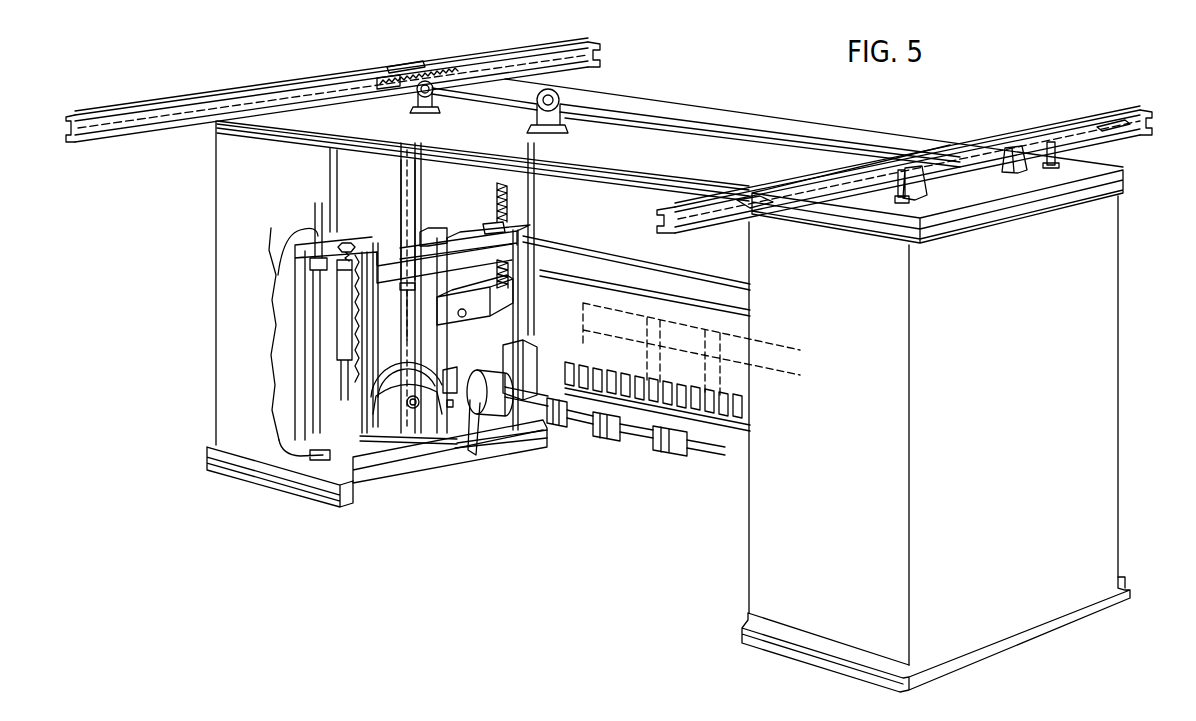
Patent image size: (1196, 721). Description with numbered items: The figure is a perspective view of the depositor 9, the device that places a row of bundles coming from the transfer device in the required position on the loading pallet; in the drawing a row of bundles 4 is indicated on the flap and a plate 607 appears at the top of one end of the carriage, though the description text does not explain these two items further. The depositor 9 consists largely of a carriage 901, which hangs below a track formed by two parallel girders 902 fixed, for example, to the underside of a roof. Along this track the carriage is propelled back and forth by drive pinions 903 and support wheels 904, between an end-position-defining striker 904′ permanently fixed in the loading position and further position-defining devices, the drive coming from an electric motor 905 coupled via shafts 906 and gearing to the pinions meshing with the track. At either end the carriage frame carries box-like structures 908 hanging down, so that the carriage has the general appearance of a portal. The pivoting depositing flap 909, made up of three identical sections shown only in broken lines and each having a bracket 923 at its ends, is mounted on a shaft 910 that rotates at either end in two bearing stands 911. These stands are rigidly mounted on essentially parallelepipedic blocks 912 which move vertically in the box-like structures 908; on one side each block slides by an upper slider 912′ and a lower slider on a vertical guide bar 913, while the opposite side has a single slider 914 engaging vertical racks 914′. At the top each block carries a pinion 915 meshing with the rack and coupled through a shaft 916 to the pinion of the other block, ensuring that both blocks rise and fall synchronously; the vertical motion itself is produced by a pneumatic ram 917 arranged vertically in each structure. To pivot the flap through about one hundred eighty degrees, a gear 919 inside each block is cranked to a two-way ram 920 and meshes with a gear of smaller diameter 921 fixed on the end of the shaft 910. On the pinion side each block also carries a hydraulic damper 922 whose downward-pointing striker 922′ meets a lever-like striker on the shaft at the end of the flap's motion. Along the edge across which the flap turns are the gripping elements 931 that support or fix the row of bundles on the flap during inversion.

The depositor 9 is at (763, 113).
The workpiece 4 is at (627, 320).
The table top plate 607 is at (1122, 180).
The carriage 901 is at (618, 153).
The parallel girders 902 is at (135, 108).
The drive pinions 903 is at (416, 96).
The support wheels 904 is at (1002, 148).
The position-defining striker 904′ is at (750, 210).
The electric motor 905 is at (550, 92).
The shafts 906 is at (488, 97).
The box-like structures 908 is at (266, 170).
The depositing flap 909 is at (590, 357).
The shaft 910 is at (578, 420).
The bearing stands 911 is at (453, 413).
The blocks 912 is at (373, 238).
The upper slider 912′ is at (312, 262).
The vertical guide bar 913 is at (317, 297).
The single slider 914 is at (515, 298).
The racks 914′ is at (503, 203).
The pinion 915 is at (486, 226).
The shaft 916 is at (550, 242).
The pneumatic ram 917 is at (413, 198).
The gear 919 is at (414, 376).
The ram 920 is at (337, 338).
The gear of smaller diameter 921 is at (463, 358).
The hydraulic damper 922 is at (527, 368).
The striker 922′ is at (517, 443).
The bracket 923 is at (607, 438).
The gripping elements 931 is at (700, 433).